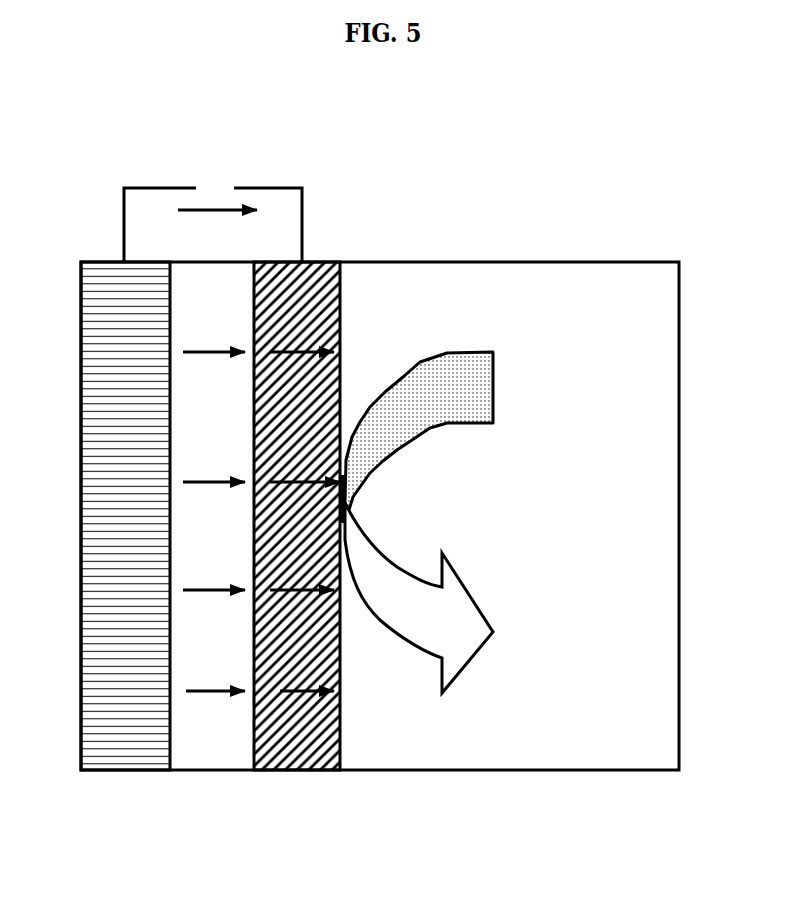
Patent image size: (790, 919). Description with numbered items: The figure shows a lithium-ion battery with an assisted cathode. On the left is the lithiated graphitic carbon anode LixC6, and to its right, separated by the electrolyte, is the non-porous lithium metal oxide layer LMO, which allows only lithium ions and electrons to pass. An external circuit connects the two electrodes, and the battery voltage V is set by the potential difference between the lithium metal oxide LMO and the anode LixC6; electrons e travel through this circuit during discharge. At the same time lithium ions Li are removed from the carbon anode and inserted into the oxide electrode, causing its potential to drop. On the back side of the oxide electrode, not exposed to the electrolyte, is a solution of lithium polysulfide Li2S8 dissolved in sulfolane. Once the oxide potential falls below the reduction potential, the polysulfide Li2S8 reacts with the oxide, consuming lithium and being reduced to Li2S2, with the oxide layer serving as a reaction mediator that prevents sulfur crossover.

The lithiated graphitic carbon anode LixC6 is at (120, 771).
The lithium metal oxide layer LMO is at (290, 771).
The battery voltage V is at (213, 209).
The electrons e is at (217, 235).
The lithium ions Li is at (261, 521).
The lithium polysulfide Li2S8 is at (479, 437).
The lithium polysulfide Li2S2 is at (484, 602).